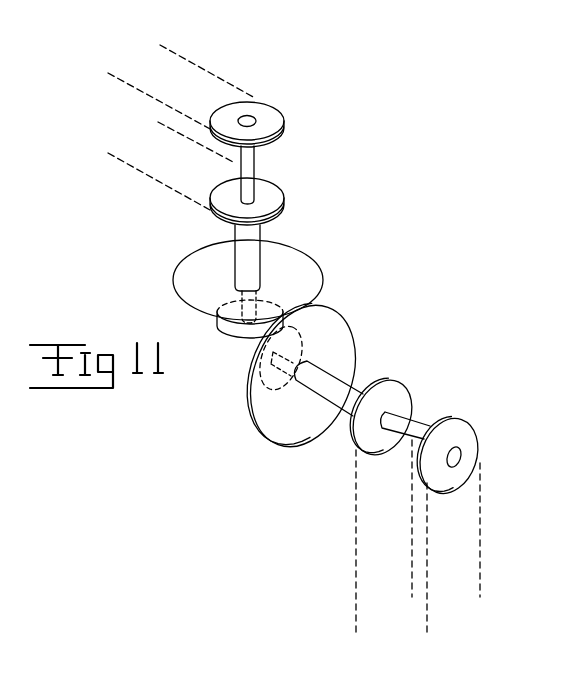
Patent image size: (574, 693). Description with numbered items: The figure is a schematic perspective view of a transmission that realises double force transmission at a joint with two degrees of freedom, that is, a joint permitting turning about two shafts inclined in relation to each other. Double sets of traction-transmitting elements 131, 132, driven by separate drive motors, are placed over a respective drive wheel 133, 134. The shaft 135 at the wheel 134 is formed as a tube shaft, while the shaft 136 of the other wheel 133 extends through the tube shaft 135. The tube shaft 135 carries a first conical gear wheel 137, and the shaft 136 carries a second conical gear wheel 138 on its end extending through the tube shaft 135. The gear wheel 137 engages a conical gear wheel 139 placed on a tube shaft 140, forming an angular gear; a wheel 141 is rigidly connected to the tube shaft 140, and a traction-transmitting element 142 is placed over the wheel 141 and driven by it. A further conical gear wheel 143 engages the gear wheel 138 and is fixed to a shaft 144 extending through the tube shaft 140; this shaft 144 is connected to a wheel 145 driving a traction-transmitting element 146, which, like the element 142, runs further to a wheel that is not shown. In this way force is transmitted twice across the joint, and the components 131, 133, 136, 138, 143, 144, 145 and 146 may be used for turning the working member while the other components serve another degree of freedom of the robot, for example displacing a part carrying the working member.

The traction-transmitting element 131 is at (207, 70).
The traction-transmitting element 132 is at (140, 172).
The drive wheel 133 is at (275, 122).
The drive wheel 134 is at (275, 198).
The tube shaft 135 is at (245, 258).
The shaft 136 is at (252, 167).
The first conical gear wheel 137 is at (190, 292).
The second conical gear wheel 138 is at (242, 332).
The conical gear wheel 139 is at (340, 330).
The tube shaft 140 is at (317, 397).
The wheel 141 is at (398, 402).
The traction-transmitting element 142 is at (357, 545).
The further conical gear wheel 143 is at (255, 368).
The shaft 144 is at (408, 438).
The wheel 145 is at (468, 433).
The traction-transmitting element 146 is at (427, 632).